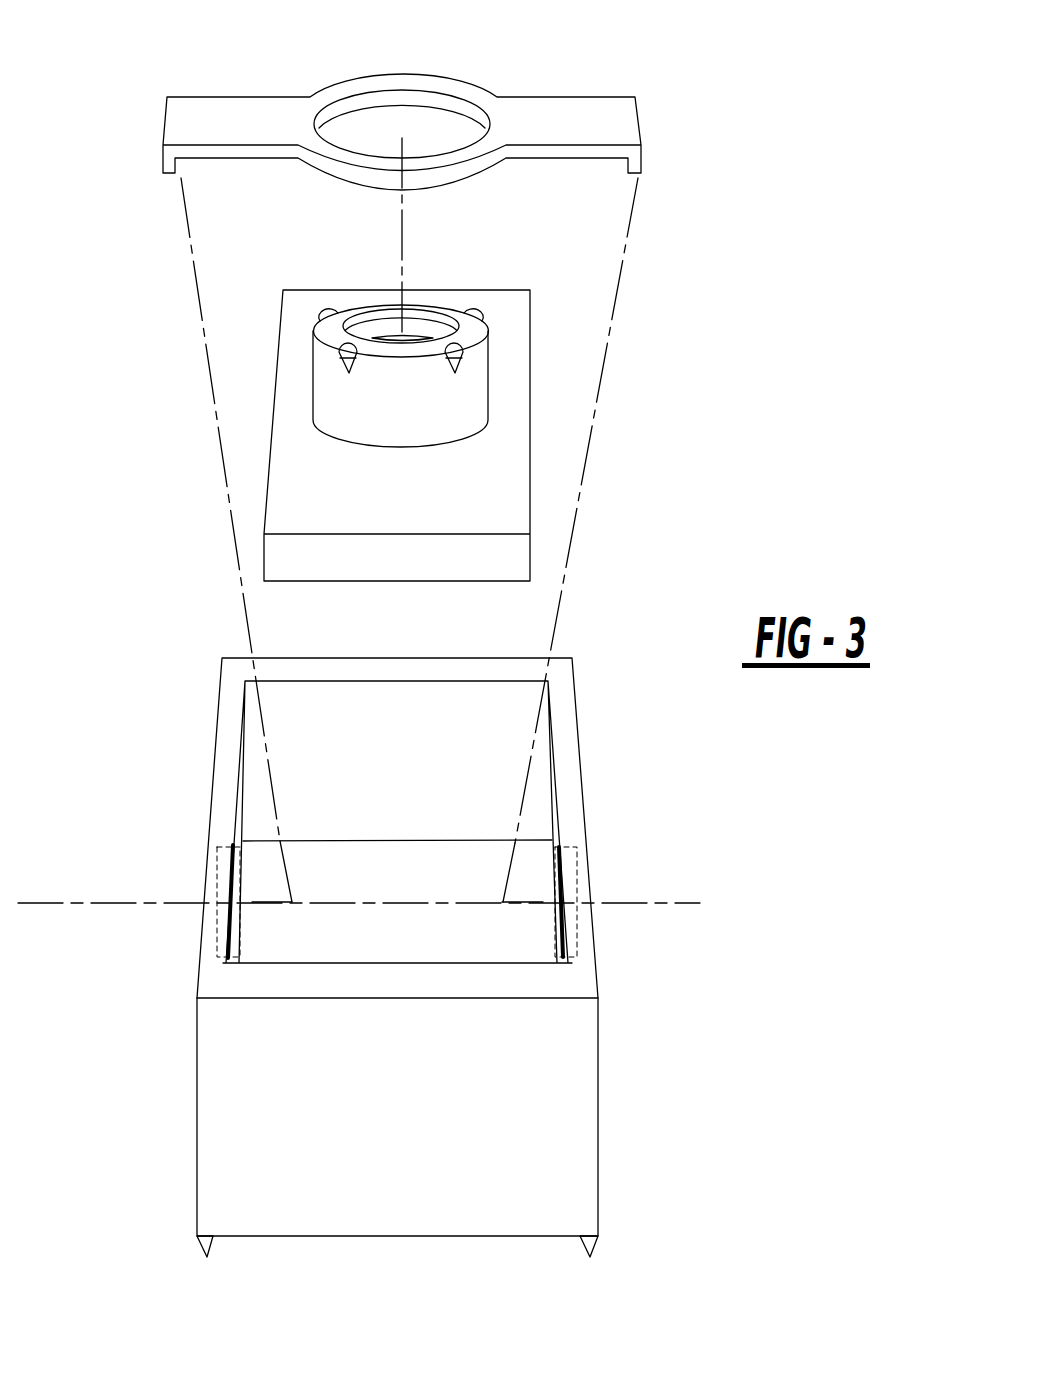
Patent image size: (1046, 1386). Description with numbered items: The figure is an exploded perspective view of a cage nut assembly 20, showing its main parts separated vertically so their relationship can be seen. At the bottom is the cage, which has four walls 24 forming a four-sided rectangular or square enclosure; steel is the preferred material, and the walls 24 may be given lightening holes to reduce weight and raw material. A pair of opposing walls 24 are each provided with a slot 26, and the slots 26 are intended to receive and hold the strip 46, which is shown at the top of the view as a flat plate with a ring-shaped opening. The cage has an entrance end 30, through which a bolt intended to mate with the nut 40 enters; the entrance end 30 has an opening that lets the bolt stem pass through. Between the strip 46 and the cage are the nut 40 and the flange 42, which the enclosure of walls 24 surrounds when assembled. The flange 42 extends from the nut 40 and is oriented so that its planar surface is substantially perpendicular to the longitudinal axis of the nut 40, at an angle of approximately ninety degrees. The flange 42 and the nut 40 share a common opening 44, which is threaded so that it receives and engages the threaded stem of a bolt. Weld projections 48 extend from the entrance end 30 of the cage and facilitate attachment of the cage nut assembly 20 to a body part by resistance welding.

The cage nut assembly 20 is at (446, 974).
The walls 24 is at (393, 1110).
The slots 26 is at (575, 863).
The entrance end 30 is at (397, 881).
The nut 40 is at (415, 330).
The flange 42 is at (532, 397).
The common opening 44 is at (373, 318).
The strip 46 is at (638, 120).
The weld projections 48 is at (420, 1261).